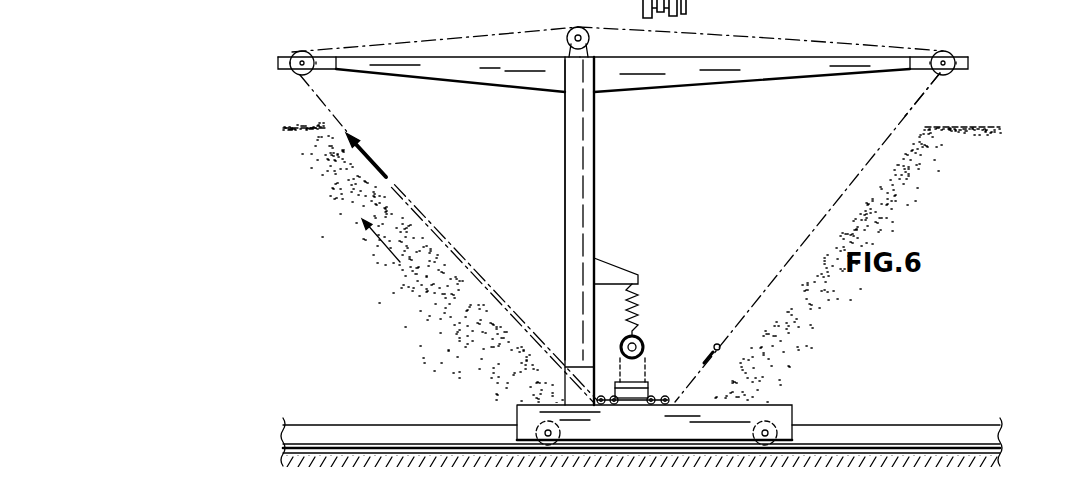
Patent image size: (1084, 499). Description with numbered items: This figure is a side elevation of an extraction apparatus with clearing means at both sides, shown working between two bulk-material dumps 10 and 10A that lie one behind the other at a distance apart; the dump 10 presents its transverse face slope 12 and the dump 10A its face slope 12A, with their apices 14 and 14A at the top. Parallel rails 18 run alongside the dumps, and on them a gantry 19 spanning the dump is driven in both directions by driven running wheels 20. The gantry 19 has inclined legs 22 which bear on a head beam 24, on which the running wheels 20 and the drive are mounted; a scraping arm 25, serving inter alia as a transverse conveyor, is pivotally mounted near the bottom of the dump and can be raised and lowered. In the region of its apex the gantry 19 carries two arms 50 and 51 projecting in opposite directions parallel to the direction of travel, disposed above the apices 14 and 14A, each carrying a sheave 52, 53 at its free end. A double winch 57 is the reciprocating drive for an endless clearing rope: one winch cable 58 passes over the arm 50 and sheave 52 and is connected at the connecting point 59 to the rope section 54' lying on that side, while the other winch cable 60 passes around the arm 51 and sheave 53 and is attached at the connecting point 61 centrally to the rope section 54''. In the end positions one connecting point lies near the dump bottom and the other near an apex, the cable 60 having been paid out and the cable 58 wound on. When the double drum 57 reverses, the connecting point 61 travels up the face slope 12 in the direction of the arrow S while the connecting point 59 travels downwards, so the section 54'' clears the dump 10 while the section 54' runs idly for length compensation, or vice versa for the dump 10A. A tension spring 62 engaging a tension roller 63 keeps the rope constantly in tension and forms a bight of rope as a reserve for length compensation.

The bulk-material dump 10 is at (330, 299).
The bulk-material dump 10A is at (943, 224).
The transverse face slope 12 is at (406, 212).
The transverse face slope 12A is at (910, 134).
The dump apex 14 is at (291, 126).
The dump apex 14A is at (970, 125).
The rails 18 is at (920, 445).
The gantry 19 is at (606, 177).
The driven running wheels 20 is at (540, 428).
The inclined leg 22 is at (565, 142).
The head beam 24 is at (628, 439).
The scraping arm 25 is at (645, 390).
The arm 50 is at (441, 64).
The arm 51 is at (792, 63).
The sheave 52 is at (302, 51).
The sheave 53 is at (943, 50).
The clearing rope section 54' is at (510, 301).
The clearing rope section 54'' is at (747, 380).
The double winch 57 is at (586, 29).
The winch cable 58 is at (512, 32).
The connecting point 59 is at (361, 146).
The winch cable 60 is at (760, 40).
The connecting point 61 is at (717, 344).
The tension spring 62 is at (633, 294).
The tension roller 63 is at (641, 342).
The arrow S is at (381, 242).